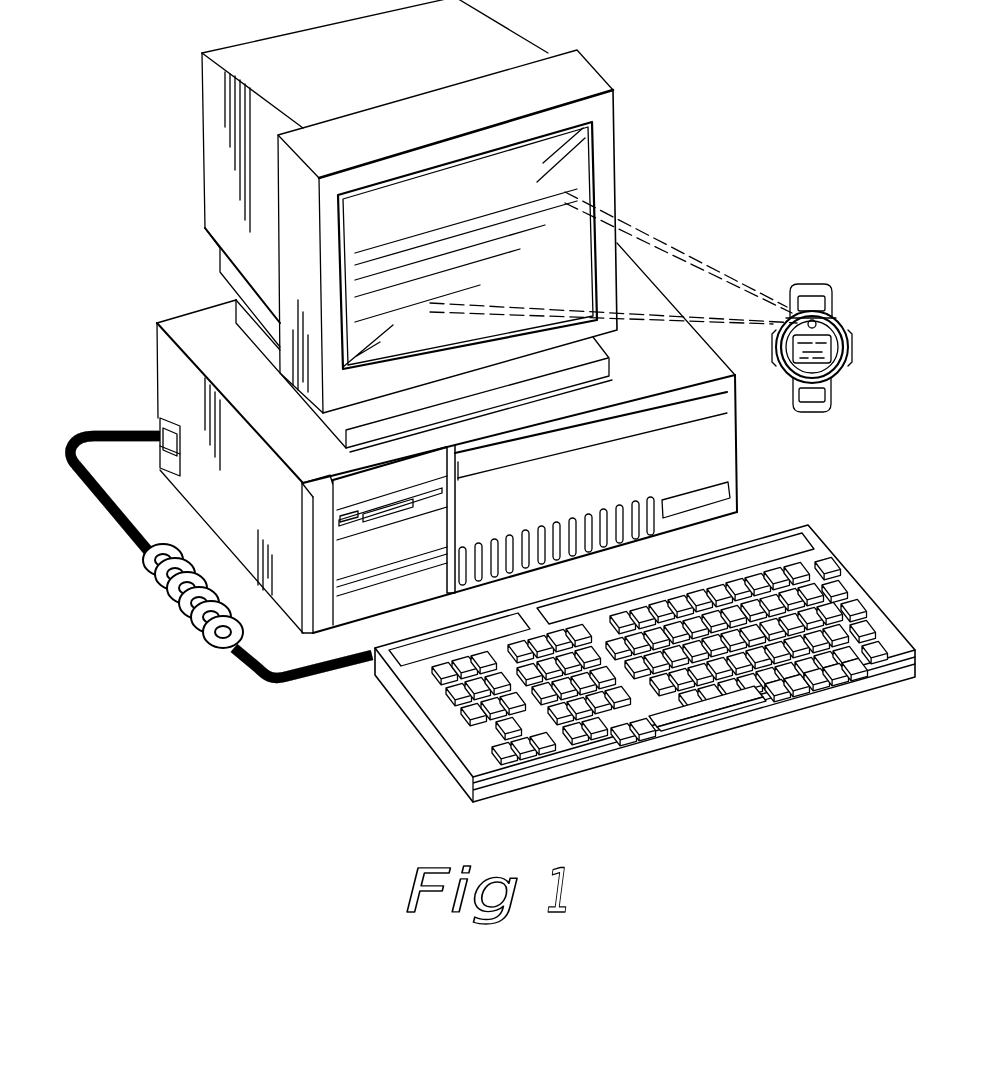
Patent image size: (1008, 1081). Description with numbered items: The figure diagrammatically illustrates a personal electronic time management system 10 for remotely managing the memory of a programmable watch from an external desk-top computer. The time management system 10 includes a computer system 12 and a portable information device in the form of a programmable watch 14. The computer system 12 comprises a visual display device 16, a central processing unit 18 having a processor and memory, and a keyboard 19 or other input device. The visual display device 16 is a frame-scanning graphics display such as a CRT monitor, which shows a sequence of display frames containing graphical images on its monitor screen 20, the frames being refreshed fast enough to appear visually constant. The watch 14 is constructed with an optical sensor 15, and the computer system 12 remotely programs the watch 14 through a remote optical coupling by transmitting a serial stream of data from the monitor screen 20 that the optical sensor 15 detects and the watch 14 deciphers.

The personal electronic time management system 10 is at (742, 197).
The computer system 12 is at (158, 281).
The programmable watch 14 is at (813, 266).
The optical sensor 15 is at (830, 326).
The visual display device 16 is at (580, 78).
The central processing unit (CPU) 18 is at (718, 462).
The keyboard 19 is at (838, 562).
The monitor screen 20 is at (578, 171).